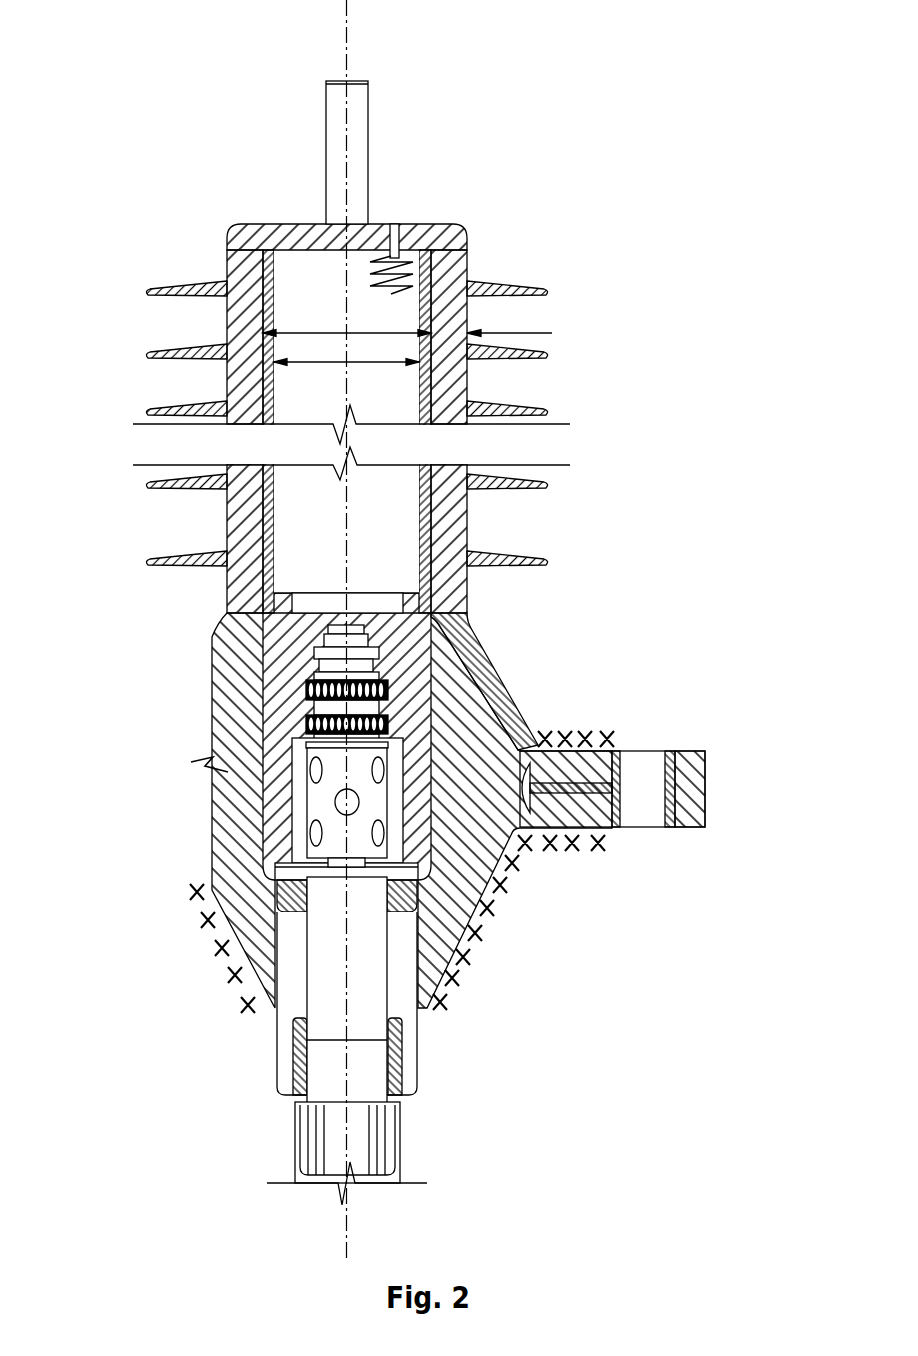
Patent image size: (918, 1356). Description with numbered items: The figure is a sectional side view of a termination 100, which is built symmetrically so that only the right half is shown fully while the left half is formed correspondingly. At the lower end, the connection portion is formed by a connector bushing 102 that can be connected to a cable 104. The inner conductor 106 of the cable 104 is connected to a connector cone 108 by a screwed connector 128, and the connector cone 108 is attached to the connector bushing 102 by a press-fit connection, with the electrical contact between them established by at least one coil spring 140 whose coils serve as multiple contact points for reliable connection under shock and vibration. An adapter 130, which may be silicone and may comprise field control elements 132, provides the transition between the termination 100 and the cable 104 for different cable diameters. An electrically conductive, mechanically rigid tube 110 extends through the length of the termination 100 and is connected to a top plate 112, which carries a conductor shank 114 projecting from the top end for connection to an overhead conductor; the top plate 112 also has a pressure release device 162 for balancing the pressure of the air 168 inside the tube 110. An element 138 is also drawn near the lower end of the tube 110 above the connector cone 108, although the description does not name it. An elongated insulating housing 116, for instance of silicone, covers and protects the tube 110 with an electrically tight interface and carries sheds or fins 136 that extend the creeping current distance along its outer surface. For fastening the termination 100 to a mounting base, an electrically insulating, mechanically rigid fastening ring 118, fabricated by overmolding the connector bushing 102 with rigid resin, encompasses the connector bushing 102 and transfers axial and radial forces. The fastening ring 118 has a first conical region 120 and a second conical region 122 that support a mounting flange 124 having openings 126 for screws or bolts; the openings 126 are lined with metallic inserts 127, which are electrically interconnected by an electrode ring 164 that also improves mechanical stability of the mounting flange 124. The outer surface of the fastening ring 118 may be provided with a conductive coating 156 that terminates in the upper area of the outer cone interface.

The termination 100 is at (123, 32).
The connector bushing 102 is at (283, 698).
The cable 104 is at (400, 1153).
The inner conductor 106 is at (340, 862).
The connector cone 108 is at (332, 667).
The electrically conductive mechanically rigid tube 110 is at (268, 399).
The top plate 112 is at (255, 237).
The conductor shank 114 is at (357, 118).
The insulating housing 116 is at (450, 265).
The fastening ring 118 is at (490, 742).
The first conical region 120 is at (447, 668).
The second conical region 122 is at (498, 886).
The mounting flange 124 is at (590, 767).
The openings 126 is at (655, 808).
The metallic insert 127 is at (668, 760).
The screwed connector 128 is at (323, 802).
The adapter 130 is at (400, 995).
The field control elements 132 is at (395, 1057).
The sheds or fins 136 is at (533, 288).
The disc 138 is at (413, 605).
The coil spring 140 is at (307, 722).
The conductive coating 156 is at (540, 858).
The pressure release device 162 is at (400, 262).
The electrode ring 164 is at (537, 750).
The air 168 is at (387, 320).